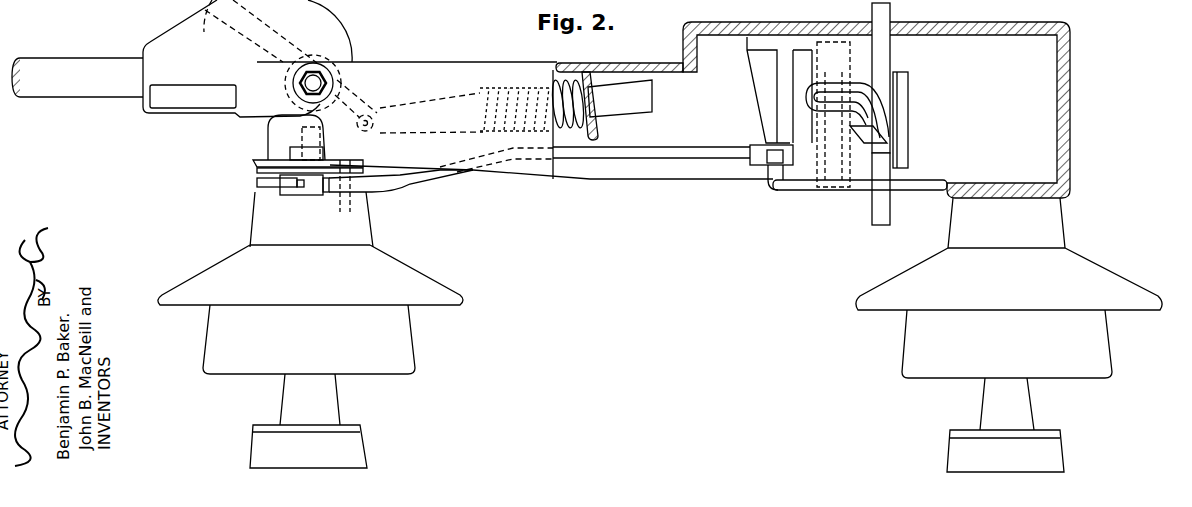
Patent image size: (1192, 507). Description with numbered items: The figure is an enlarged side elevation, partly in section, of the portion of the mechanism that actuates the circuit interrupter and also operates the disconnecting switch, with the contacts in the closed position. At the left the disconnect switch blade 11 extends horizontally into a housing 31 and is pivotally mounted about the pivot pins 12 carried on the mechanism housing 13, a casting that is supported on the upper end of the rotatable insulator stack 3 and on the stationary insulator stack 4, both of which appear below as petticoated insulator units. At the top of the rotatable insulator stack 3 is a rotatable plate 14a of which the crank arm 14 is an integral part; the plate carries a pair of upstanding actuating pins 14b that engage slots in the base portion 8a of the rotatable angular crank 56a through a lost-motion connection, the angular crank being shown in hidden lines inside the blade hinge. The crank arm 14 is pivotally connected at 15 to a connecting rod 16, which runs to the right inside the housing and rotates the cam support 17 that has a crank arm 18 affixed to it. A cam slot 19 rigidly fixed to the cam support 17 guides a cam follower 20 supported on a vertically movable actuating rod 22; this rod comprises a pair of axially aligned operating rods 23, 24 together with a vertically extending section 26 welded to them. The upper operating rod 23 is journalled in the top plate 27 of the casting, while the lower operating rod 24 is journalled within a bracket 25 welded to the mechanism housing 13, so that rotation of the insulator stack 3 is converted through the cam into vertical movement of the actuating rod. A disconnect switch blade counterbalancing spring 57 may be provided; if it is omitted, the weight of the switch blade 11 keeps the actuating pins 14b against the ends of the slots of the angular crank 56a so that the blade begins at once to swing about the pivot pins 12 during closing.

The disconnect switch blade 11 is at (67, 58).
The housing 31 is at (174, 36).
The rotatable angular crank 56a is at (333, 66).
The mechanism housing 13 is at (378, 62).
The pivot pins 12 is at (334, 86).
The base portion 8a is at (259, 160).
The actuating pins 14b is at (254, 163).
The rotatable plate 14a is at (258, 172).
The crank arm 14 is at (262, 188).
The pivotal connection 15 is at (293, 194).
The connecting rod 16 is at (424, 183).
The disconnect switch blade counterbalancing spring 57 is at (526, 87).
The top plate 27 is at (824, 23).
The vertically movable actuating rod 22 is at (893, 47).
The upper operating rod 23 is at (892, 14).
The lower operating rod 24 is at (891, 211).
The cam support 17 is at (804, 182).
The cam slot 19 is at (870, 100).
The cam follower 20 is at (885, 128).
The vertically extending section 26 is at (908, 141).
The crank arm 18 is at (778, 181).
The bracket 25 is at (863, 192).
The rotatable insulator stack 3 is at (450, 300).
The stationary insulator stack 4 is at (1150, 301).